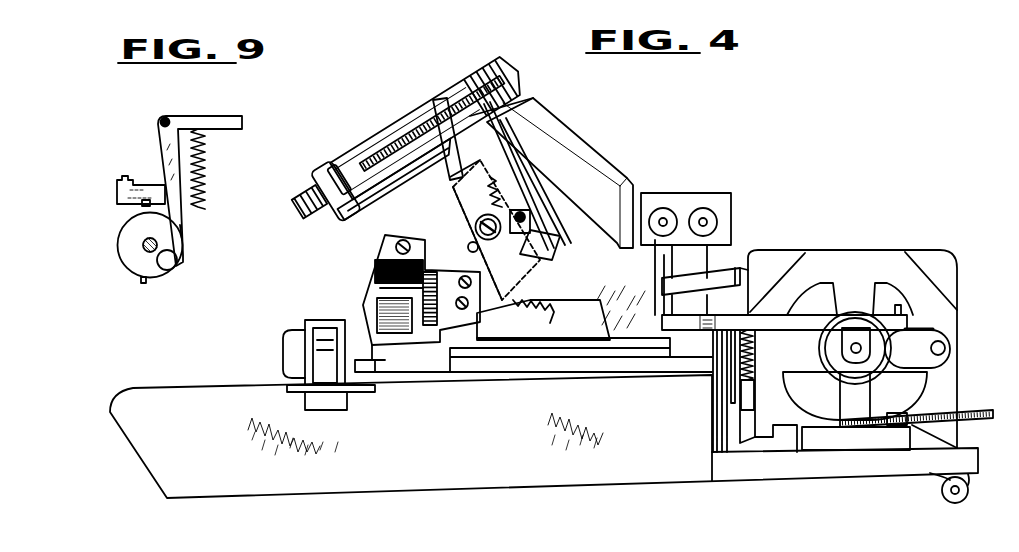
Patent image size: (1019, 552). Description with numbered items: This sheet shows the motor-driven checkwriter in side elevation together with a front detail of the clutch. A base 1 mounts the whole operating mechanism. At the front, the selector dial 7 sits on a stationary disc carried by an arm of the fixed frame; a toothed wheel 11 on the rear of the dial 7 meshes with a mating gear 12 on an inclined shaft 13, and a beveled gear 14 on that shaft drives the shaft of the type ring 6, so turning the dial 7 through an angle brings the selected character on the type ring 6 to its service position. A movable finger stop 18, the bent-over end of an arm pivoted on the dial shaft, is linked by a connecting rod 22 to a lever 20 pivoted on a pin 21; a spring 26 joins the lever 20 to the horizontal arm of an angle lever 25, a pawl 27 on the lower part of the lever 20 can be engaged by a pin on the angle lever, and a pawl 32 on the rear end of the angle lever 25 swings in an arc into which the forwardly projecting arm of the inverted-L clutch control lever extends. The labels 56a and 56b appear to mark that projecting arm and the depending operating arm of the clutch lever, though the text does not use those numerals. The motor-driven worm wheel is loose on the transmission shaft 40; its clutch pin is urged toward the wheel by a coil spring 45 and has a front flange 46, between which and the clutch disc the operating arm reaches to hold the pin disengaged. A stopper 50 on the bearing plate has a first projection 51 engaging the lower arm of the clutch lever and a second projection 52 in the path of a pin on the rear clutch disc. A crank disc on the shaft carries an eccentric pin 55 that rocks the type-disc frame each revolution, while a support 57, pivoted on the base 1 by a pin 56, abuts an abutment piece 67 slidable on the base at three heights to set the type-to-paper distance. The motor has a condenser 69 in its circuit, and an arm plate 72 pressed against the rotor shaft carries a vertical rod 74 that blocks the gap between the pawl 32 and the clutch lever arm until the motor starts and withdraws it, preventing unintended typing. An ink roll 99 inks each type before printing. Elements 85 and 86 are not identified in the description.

In FIG. 4, the base structure 1 is at (205, 400).
In FIG. 4, the type ring 6 is at (395, 218).
In FIG. 4, the selector dial 7 is at (429, 126).
In FIG. 4, the toothed wheel 11 is at (403, 139).
In FIG. 4, the mating gear 12 is at (432, 123).
In FIG. 4, the inclined shaft 13 is at (523, 176).
In FIG. 4, the beveled gear 14 is at (584, 249).
In FIG. 4, the movable finger stop 18 is at (323, 199).
In FIG. 4, the lever 20 is at (500, 154).
In FIG. 4, the pin 21 is at (473, 208).
In FIG. 4, the connecting rod 22 is at (398, 180).
In FIG. 4, the angle lever 25 is at (561, 407).
In FIG. 4, the spring 26 is at (520, 197).
In FIG. 4, the pawl 27 is at (469, 250).
In FIG. 4, the pawl 32 is at (647, 200).
In FIG. 9, the transmission shaft 40 is at (143, 247).
In FIG. 9, the coil spring 45 is at (128, 258).
In FIG. 9, the front flange 46 is at (167, 271).
In FIG. 9, the stopper 50 is at (116, 198).
In FIG. 9, the first projection 51 is at (130, 208).
In FIG. 9, the second projection 52 is at (148, 200).
In FIG. 9, the eccentric pin 55 is at (164, 118).
In FIG. 9, the pin 56 is at (221, 118).
In FIG. 4, the pin 56 is at (742, 267).
In FIG. 4, the lever arm 56a is at (684, 284).
In FIG. 9, the lever end 56b is at (186, 244).
In FIG. 4, the support 57 is at (898, 249).
In FIG. 4, the abutment piece 67 is at (767, 447).
In FIG. 4, the condenser 69 is at (690, 193).
In FIG. 4, the arm plate 72 is at (822, 315).
In FIG. 4, the vertical rod 74 is at (657, 330).
In FIG. 4, the bracket 85 is at (320, 320).
In FIG. 4, the bracket plate 86 is at (347, 410).
In FIG. 4, the ink-roll 99 is at (387, 370).